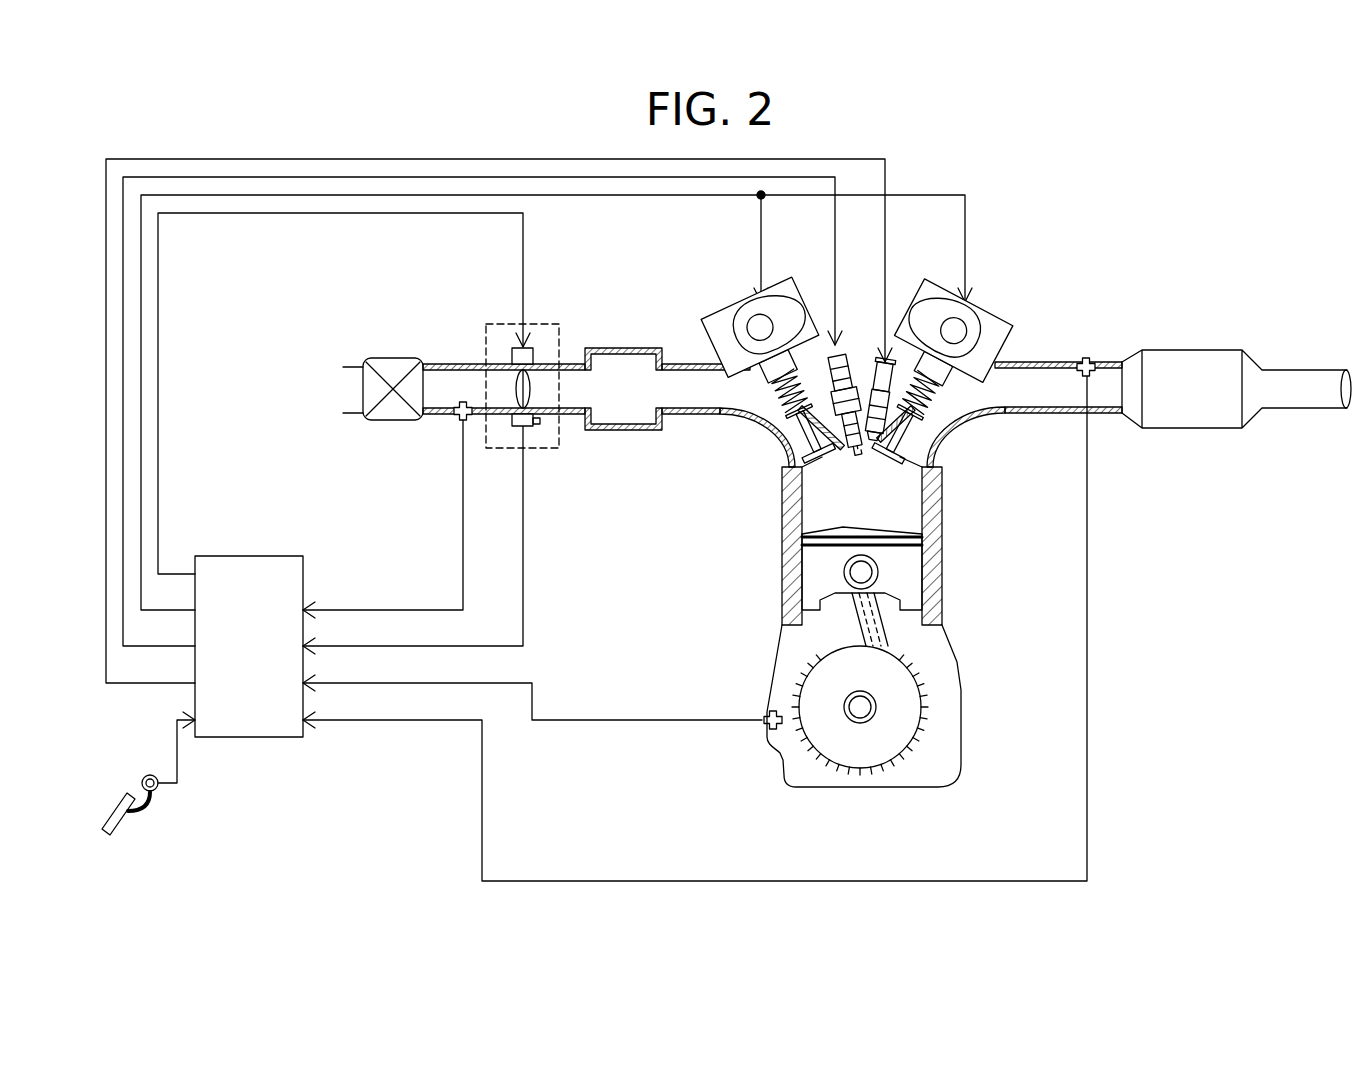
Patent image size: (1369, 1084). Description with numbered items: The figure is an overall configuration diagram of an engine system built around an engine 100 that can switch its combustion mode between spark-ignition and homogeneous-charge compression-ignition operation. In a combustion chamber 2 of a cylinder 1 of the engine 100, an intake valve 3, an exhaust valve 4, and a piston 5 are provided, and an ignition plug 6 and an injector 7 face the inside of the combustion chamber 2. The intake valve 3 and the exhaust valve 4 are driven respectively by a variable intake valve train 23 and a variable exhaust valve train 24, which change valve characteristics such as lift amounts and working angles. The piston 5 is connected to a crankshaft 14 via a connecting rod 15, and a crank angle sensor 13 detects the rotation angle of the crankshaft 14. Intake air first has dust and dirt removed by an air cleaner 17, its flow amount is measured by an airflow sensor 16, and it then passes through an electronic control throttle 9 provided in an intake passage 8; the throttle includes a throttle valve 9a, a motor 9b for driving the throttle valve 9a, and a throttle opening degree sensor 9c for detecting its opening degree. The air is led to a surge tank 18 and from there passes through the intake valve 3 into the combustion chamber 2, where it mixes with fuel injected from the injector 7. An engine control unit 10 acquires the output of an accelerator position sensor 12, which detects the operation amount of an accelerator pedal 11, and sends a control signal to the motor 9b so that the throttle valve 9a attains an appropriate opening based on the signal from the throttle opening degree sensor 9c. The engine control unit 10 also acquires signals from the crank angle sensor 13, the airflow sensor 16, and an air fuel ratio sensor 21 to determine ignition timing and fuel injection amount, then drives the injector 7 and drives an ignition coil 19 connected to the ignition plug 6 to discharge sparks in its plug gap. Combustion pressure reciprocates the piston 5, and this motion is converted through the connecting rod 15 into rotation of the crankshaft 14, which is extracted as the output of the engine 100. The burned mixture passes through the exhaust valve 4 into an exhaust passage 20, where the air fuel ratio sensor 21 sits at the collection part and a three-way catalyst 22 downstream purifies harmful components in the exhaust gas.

The cylinder 1 is at (938, 533).
The combustion chamber 2 is at (815, 520).
The intake valve 3 is at (790, 458).
The exhaust valve 4 is at (935, 460).
The piston 5 is at (815, 572).
The ignition plug 6 is at (852, 455).
The injector 7 is at (875, 450).
The intake passage 8 is at (462, 364).
The electronic control throttle 9 is at (533, 375).
The throttle valve 9a is at (532, 388).
The motor 9b is at (533, 357).
The throttle opening degree sensor 9c is at (540, 428).
The engine control unit (ECU) 10 is at (248, 737).
The accelerator pedal 11 is at (125, 820).
The accelerator position sensor 12 is at (148, 774).
The crank angle sensor 13 is at (760, 722).
The crankshaft 14 is at (878, 707).
The connecting rod 15 is at (880, 630).
The airflow sensor 16 is at (455, 420).
The air cleaner 17 is at (410, 357).
The surge tank 18 is at (625, 425).
The ignition coil 19 is at (838, 353).
The exhaust passage 20 is at (1040, 362).
The air fuel ratio sensor 21 is at (1092, 358).
The three-way catalyst 22 is at (1190, 428).
The variable intake valve train 23 is at (810, 305).
The variable exhaust valve train 24 is at (985, 305).
The engine 100 is at (772, 812).